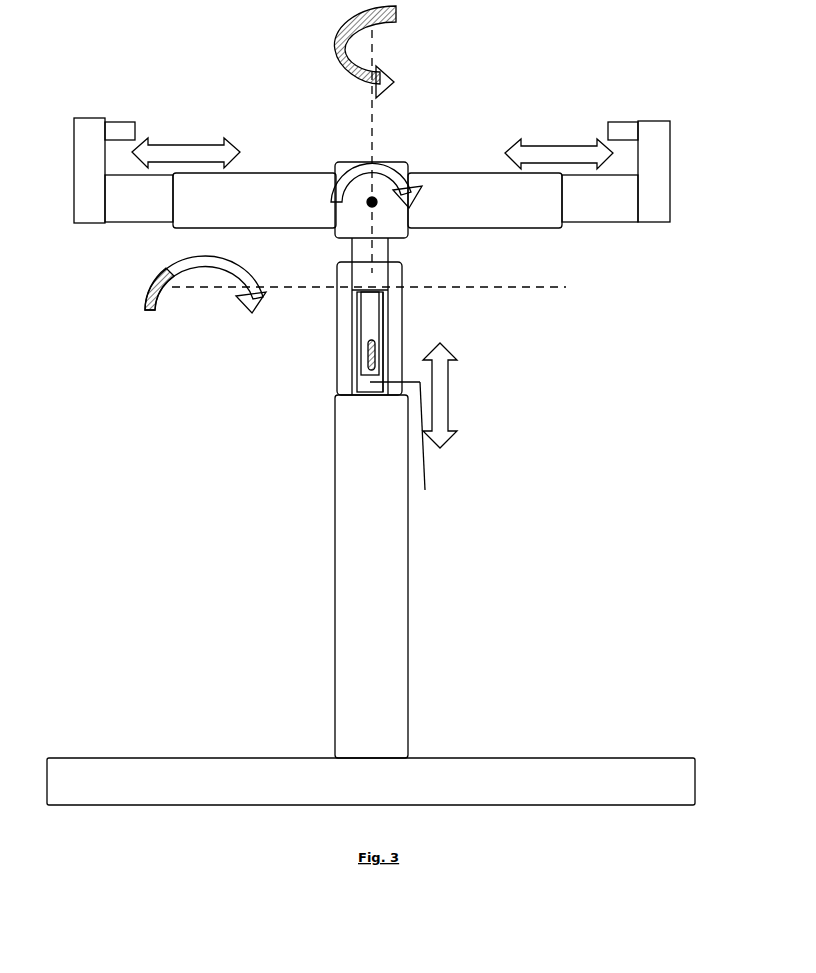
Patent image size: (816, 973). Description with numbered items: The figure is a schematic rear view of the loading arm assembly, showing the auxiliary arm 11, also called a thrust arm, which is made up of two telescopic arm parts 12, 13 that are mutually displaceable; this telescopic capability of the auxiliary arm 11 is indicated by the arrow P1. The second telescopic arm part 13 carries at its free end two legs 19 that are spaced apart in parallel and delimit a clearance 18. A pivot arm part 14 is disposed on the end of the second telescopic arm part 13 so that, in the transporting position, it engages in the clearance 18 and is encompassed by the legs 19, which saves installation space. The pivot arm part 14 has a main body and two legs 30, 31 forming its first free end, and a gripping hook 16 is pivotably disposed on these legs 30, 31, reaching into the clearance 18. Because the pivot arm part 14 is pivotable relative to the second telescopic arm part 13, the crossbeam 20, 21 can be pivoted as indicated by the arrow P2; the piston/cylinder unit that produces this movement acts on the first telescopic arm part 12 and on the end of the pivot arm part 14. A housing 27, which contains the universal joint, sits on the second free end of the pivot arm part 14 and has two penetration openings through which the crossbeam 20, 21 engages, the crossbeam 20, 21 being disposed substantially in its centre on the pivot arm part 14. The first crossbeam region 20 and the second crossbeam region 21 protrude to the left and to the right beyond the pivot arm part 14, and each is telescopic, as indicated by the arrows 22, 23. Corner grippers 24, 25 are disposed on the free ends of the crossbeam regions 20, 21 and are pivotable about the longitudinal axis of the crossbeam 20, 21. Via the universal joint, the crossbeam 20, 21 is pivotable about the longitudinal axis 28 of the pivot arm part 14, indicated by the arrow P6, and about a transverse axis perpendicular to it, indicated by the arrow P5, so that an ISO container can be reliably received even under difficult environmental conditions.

The auxiliary arm 11 is at (371, 548).
The first telescopic arm part 12 is at (387, 567).
The second telescopic arm part 13 is at (362, 352).
The pivot arm part 14 is at (377, 253).
The gripping hook 16 is at (370, 365).
The clearance 18 is at (400, 448).
The legs 19 is at (357, 320).
The first crossbeam region 20 is at (263, 163).
The second crossbeam region 21 is at (445, 165).
The arrow 22 is at (170, 152).
The arrow 23 is at (547, 152).
The corner gripper 24 is at (113, 104).
The corner gripper 25 is at (658, 115).
The housing 27 is at (342, 160).
The longitudinal axis 28 is at (368, 98).
The leg 30 is at (352, 307).
The leg 31 is at (388, 340).
The arrow P1 is at (448, 395).
The arrow P2 is at (255, 282).
The arrow P5 is at (384, 170).
The arrow P6 is at (346, 25).